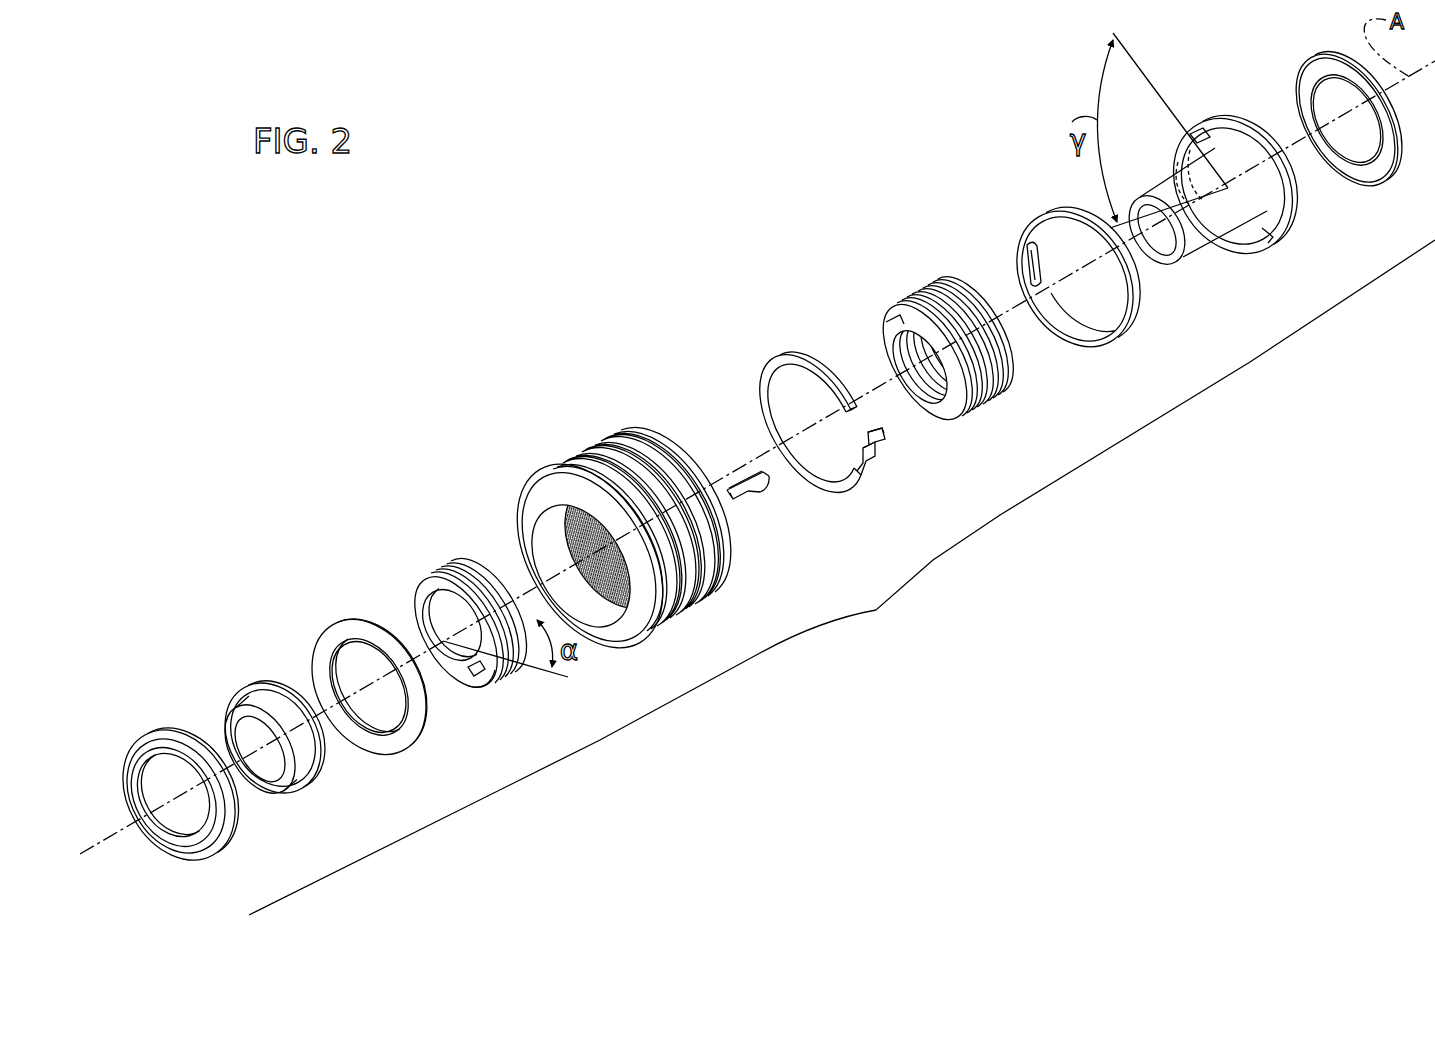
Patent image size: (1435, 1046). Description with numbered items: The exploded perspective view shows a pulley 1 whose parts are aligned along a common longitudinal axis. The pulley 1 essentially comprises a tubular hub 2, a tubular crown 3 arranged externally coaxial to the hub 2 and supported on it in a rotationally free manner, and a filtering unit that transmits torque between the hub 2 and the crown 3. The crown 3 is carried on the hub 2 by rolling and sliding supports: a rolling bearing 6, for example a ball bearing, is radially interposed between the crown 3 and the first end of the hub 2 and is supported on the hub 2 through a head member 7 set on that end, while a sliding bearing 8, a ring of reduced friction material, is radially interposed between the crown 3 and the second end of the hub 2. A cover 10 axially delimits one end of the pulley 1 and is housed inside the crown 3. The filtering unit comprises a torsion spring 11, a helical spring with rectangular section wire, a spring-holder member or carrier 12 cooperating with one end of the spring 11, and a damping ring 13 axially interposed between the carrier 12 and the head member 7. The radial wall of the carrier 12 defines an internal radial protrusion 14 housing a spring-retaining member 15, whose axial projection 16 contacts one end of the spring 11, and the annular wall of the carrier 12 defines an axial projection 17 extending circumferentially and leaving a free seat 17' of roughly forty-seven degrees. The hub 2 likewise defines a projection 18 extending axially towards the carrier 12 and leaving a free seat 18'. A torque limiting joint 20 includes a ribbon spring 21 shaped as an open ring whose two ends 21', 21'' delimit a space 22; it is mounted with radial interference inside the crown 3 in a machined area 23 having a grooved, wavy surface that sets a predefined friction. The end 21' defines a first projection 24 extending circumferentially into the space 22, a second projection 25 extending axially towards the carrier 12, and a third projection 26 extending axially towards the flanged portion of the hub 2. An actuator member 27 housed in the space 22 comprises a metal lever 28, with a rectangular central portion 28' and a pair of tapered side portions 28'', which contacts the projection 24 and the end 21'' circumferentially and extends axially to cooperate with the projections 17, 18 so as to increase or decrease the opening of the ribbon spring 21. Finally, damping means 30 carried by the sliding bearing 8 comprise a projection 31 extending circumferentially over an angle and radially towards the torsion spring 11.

The pulley 1 is at (877, 614).
The tubular hub 2 is at (1207, 268).
The tubular crown 3 is at (604, 425).
The rolling bearing 6 is at (165, 728).
The head member 7 is at (240, 678).
The sliding bearing 8 is at (1022, 212).
The cover 10 is at (1301, 67).
The torsion spring 11 is at (913, 289).
The spring-holder member (carrier) 12 is at (431, 560).
The damping ring 13 is at (353, 628).
The internal radial protrusion 14 is at (473, 660).
The spring-retaining member 15 is at (474, 680).
The axial projection 16 is at (496, 688).
The axial projection 17 is at (456, 608).
The free seat 17' is at (489, 651).
The projection 18 is at (1212, 100).
The free seat 18' is at (1313, 230).
The torque limiting joint 20 is at (793, 350).
The ribbon spring 21 is at (891, 493).
The end portion of ribbon spring 21' is at (902, 481).
The end portion of ribbon spring 21'' is at (855, 366).
The space 22 is at (860, 425).
The machined area 23 is at (592, 600).
The first projection 24 is at (867, 427).
The second projection 25 is at (846, 482).
The third projection 26 is at (880, 443).
The actuator member 27 is at (730, 470).
The metal lever 28 is at (771, 527).
The central portion 28' is at (777, 531).
The tapered side portions 28'' is at (783, 495).
The damping means 30 is at (1021, 257).
The projection 31 is at (1027, 273).